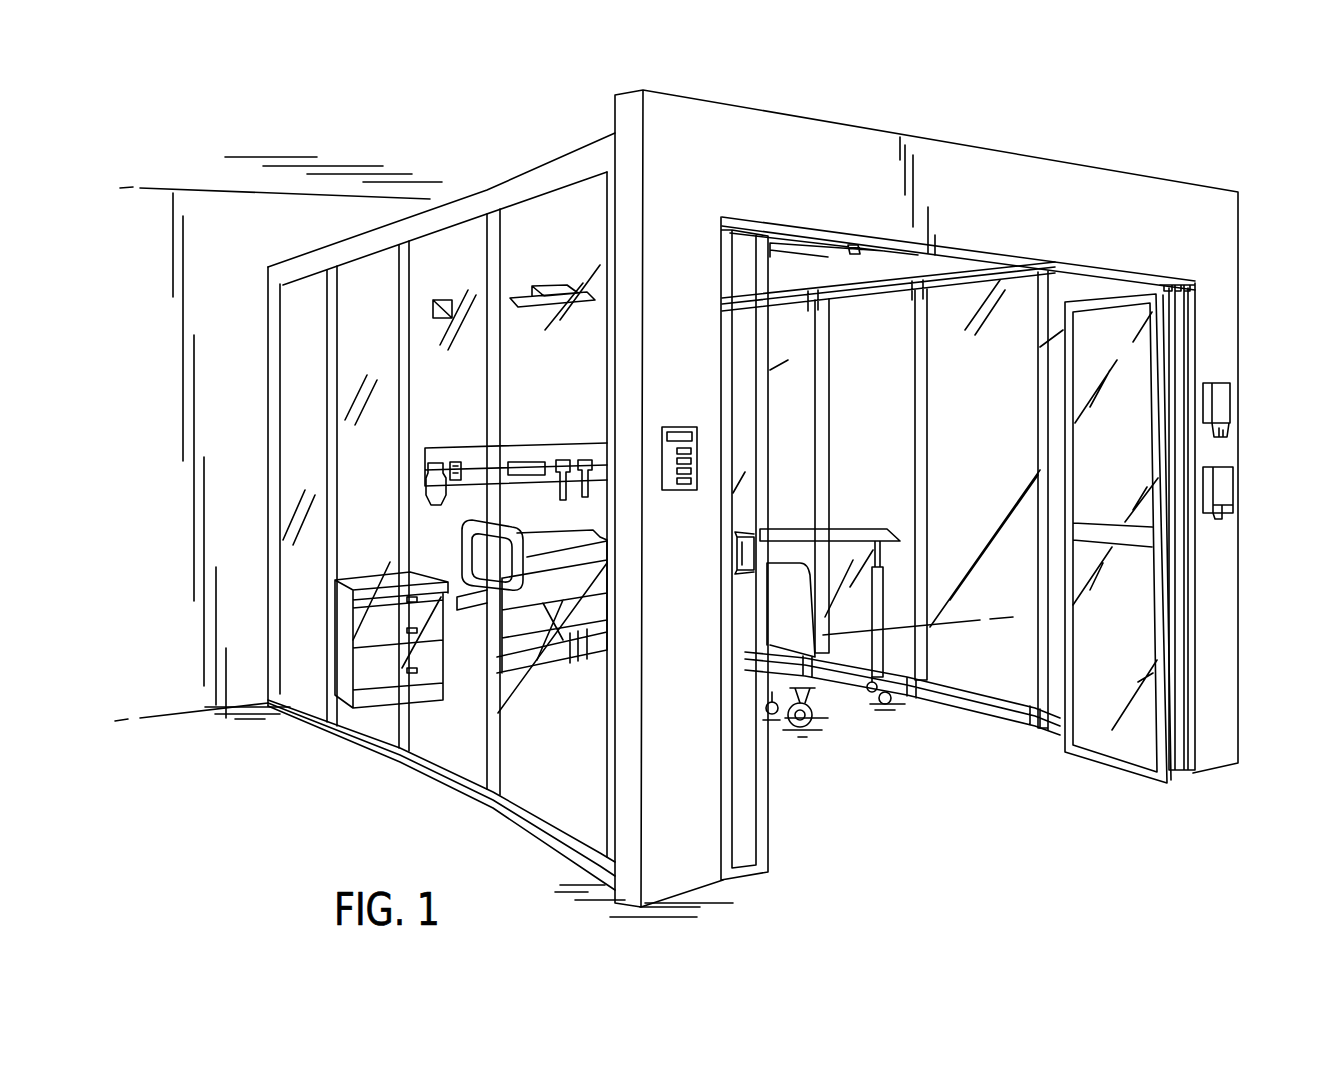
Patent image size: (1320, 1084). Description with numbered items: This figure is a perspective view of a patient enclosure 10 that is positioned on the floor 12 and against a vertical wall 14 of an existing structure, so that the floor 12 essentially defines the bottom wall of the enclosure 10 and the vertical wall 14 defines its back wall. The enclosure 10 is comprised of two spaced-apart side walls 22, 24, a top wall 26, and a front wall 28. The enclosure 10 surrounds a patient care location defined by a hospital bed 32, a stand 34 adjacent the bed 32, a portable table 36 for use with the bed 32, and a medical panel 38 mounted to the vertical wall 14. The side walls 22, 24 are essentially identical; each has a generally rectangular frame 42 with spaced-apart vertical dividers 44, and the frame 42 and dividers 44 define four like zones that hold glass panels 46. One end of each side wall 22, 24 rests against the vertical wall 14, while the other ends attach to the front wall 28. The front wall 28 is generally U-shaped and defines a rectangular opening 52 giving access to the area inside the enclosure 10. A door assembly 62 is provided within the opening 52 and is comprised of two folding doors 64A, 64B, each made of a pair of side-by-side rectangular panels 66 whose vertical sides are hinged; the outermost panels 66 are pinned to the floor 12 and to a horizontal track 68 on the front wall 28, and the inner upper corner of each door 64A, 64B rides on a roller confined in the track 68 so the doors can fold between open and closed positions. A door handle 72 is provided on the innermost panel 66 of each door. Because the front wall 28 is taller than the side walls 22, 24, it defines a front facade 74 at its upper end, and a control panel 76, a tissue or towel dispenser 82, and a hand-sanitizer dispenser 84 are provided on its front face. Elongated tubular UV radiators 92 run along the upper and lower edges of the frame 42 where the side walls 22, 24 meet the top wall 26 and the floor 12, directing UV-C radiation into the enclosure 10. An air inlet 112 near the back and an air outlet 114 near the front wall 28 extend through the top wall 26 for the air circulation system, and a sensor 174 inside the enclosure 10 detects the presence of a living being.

The enclosure 10 is at (1118, 160).
The floor 12 is at (922, 852).
The vertical wall 14 is at (235, 663).
The side wall 22 is at (487, 188).
The side wall 24 is at (1037, 652).
The top wall 26 is at (868, 357).
The front wall 28 is at (1108, 212).
The hospital bed 32 is at (575, 558).
The stand 34 is at (361, 582).
The portable table 36 is at (848, 527).
The medical panel 38 is at (557, 445).
The frame 42 is at (360, 252).
The vertical dividers 44 is at (328, 430).
The glass panels 46 is at (842, 318).
The opening 52 is at (1027, 803).
The door assembly 62 is at (1120, 770).
The folding door 64A is at (767, 837).
The folding door 64B is at (1168, 734).
The door panels 66 is at (762, 763).
The horizontal track 68 is at (1150, 283).
The door handle 72 is at (740, 535).
The front facade 74 is at (958, 158).
The control panel 76 is at (672, 490).
The tissue or towel dispenser 82 is at (1227, 396).
The hand-sanitizer dispenser 84 is at (1228, 482).
The UV radiators 92 is at (955, 272).
The air inlet 112 is at (515, 322).
The air outlet 114 is at (858, 253).
The sensor 174 is at (445, 298).